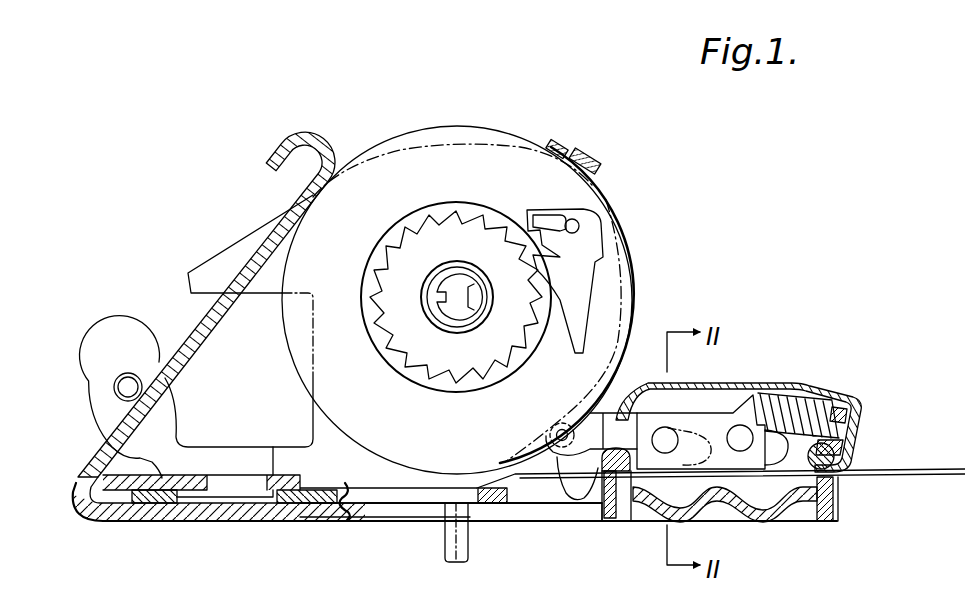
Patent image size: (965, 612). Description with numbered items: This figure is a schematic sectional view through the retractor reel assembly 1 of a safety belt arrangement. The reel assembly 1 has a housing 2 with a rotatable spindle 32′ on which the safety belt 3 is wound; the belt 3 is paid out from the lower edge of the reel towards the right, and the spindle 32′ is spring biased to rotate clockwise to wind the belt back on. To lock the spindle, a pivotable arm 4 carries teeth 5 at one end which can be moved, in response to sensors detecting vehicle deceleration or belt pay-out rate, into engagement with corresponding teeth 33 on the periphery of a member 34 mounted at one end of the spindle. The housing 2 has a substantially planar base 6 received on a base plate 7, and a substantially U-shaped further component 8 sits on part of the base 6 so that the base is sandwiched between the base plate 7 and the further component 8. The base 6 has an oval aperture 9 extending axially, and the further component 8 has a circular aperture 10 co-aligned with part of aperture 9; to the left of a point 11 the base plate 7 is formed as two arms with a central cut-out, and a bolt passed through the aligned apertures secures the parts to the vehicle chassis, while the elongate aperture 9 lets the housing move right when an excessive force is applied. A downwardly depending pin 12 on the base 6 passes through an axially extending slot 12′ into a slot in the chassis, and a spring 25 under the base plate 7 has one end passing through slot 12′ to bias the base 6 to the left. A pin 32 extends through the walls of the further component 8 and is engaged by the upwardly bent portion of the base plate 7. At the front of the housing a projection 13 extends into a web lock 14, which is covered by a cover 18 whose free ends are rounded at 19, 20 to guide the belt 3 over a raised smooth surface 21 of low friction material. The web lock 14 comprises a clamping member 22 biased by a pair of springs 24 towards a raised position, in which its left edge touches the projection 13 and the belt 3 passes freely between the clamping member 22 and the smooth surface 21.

The reel assembly 1 is at (529, 118).
The housing 2 is at (387, 492).
The safety belt 3 is at (512, 125).
The pivotable arm 4 is at (600, 244).
The teeth 5 is at (540, 227).
The planar base 6 is at (422, 498).
The base plate 7 is at (148, 526).
The further component 8 is at (128, 360).
The oval aperture 9 is at (177, 500).
The circular aperture 10 is at (222, 476).
The point 11 is at (296, 506).
The pin 12 is at (470, 552).
The slot 12′ is at (580, 504).
The projection 13 is at (612, 473).
The web lock 14 is at (796, 376).
The cover 18 is at (850, 410).
The rounded free end 19 is at (618, 452).
The rounded free end 20 is at (836, 456).
The raised smooth surface 21 is at (813, 500).
The clamping member 22 is at (706, 420).
The springs 24 is at (808, 400).
The spring 25 is at (340, 504).
The pin 32 is at (118, 380).
The spindle 32′ is at (445, 292).
The teeth 33 is at (490, 218).
The member 34 is at (425, 245).